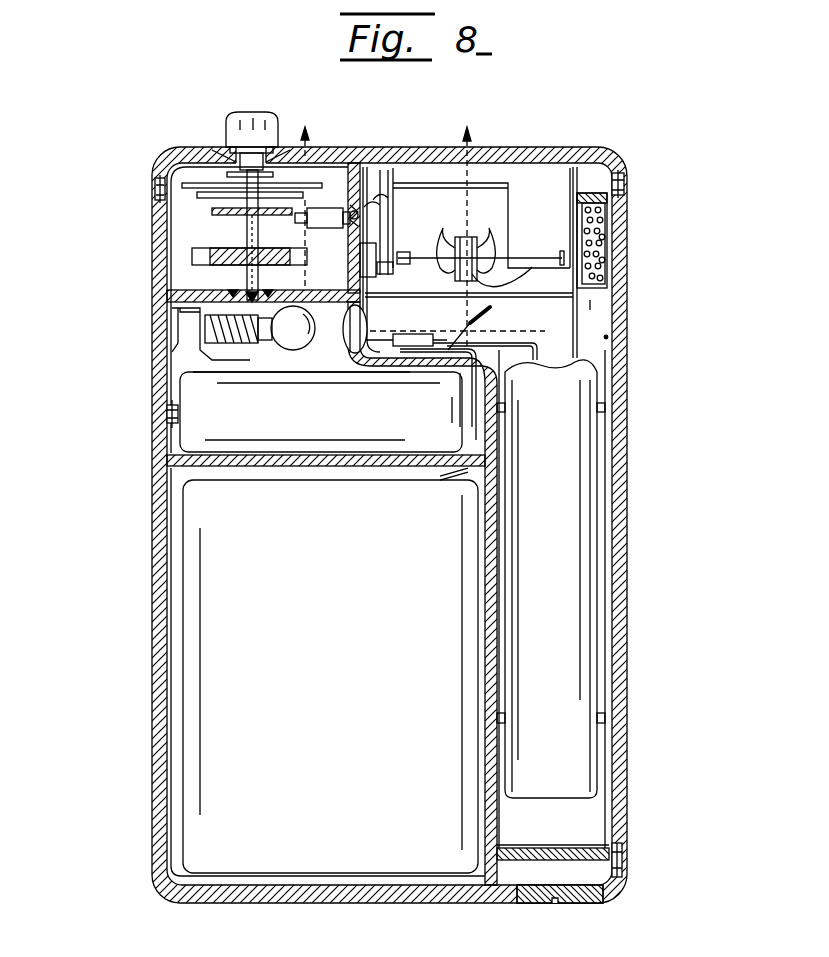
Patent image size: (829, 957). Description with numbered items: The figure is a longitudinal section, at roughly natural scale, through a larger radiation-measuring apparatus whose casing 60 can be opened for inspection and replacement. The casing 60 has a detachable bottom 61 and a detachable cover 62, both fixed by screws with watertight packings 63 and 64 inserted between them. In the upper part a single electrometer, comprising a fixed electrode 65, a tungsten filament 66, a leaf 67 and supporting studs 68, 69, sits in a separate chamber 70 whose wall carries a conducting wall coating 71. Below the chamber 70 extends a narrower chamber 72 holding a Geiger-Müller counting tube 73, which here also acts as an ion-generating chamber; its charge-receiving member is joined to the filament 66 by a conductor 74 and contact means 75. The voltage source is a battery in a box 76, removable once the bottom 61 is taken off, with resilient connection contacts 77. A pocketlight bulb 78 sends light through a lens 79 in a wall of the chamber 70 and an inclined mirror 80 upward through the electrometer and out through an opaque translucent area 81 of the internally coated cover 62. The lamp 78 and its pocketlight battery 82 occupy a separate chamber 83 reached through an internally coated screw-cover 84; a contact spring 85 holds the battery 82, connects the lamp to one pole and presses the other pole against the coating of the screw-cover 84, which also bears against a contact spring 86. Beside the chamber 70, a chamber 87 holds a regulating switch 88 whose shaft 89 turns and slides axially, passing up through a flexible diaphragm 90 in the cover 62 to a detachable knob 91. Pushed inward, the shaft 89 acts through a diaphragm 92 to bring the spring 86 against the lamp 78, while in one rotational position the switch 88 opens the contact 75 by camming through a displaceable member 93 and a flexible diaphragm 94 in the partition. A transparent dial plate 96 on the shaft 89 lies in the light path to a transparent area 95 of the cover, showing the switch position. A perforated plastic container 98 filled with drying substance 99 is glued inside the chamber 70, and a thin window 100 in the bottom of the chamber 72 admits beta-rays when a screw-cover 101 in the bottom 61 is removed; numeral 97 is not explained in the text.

The casing 60 is at (615, 602).
The detachable bottom 61 is at (370, 900).
The detachable cover 62 is at (540, 150).
The watertight packing 63 is at (630, 860).
The watertight packing 64 is at (623, 182).
The fixed electrode 65 is at (443, 267).
The tungsten filament 66 is at (530, 257).
The leaf 67 is at (468, 237).
The supporting stud 68 is at (387, 267).
The supporting stud 69 is at (530, 267).
The chamber 70 is at (595, 305).
The conducting wall coating 71 is at (606, 337).
The chamber 72 is at (602, 445).
The Geiger-Müller counting tube 73 is at (575, 520).
The conductor 74 is at (550, 300).
The contact means 75 is at (382, 200).
The box 76 is at (212, 688).
The resilient connection contacts 77 is at (453, 475).
The pocketlight bulb 78 is at (300, 347).
The lens 79 is at (362, 321).
The inclined mirror 80 is at (474, 318).
The opaque translucent area 81 is at (472, 162).
The pocketlight battery 82 is at (258, 432).
The chamber 83 is at (327, 313).
The screw-cover 84 is at (160, 428).
The contact spring 85 is at (287, 370).
The contact spring 86 is at (185, 318).
The chamber 87 is at (176, 262).
The regulating switch 88 is at (212, 212).
The shaft 89 is at (245, 232).
The flexible diaphragm 90 is at (223, 152).
The detachable knob 91 is at (227, 128).
The diaphragm 92 is at (247, 293).
The displaceable member 93 is at (322, 222).
The flexible diaphragm 94 is at (352, 210).
The transparent area 95 is at (302, 160).
The transparent dial plate 96 is at (303, 187).
The switch 97 is at (410, 333).
The plastic container 98 is at (607, 237).
The drying substance 99 is at (597, 280).
The thin window 100 is at (545, 857).
The screw-cover 101 is at (570, 900).